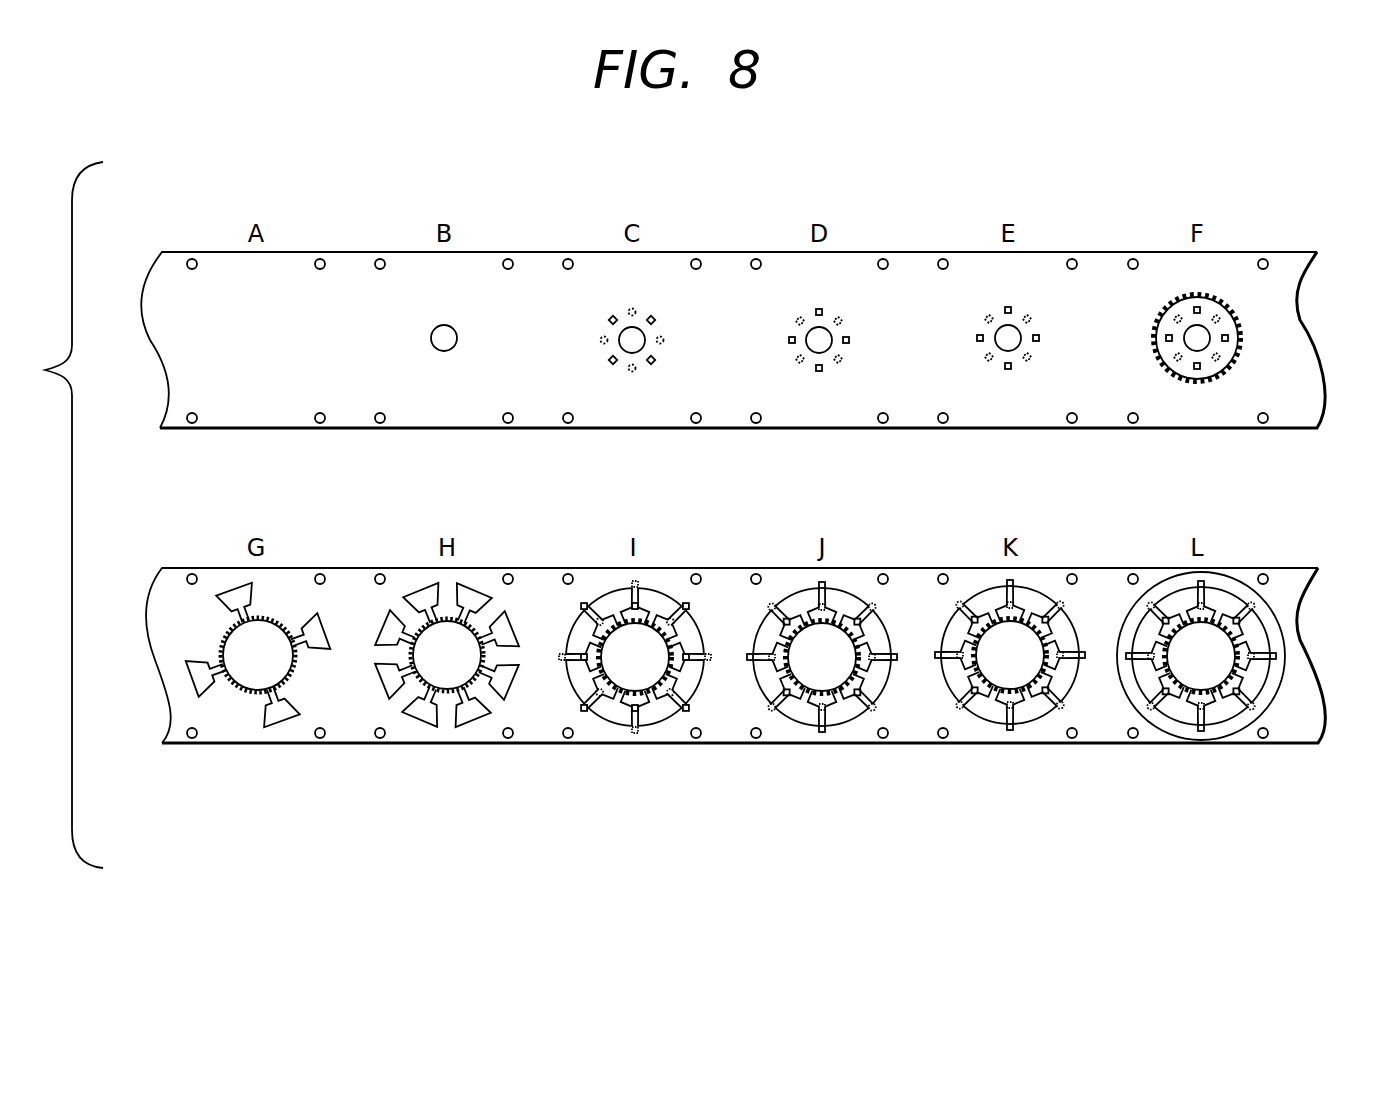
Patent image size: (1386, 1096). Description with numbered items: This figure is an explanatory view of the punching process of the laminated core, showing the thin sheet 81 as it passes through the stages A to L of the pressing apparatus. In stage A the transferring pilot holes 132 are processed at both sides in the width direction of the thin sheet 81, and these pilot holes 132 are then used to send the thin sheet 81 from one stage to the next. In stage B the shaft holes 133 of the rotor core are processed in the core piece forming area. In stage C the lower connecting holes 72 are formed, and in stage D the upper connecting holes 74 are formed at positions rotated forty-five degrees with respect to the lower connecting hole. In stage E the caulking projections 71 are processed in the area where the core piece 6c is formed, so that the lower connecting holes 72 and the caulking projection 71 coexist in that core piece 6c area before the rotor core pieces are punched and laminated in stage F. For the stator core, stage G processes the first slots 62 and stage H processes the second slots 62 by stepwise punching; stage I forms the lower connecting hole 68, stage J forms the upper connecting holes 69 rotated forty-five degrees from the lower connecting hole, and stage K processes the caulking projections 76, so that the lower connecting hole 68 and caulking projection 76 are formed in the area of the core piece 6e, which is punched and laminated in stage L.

The pilot holes 132 is at (730, 500).
The thin sheet 81 is at (153, 299).
The shaft holes 133 is at (447, 340).
The lower connecting hole 68 is at (636, 501).
The lower connecting holes 72 is at (651, 317).
The upper connecting holes 69 is at (822, 491).
The upper connecting holes 74 is at (818, 309).
The caulking projections 71 is at (1013, 498).
The caulking projections 76 is at (1008, 307).
The slots 62 is at (256, 735).
The core piece 6c is at (1212, 288).
The core piece 6e is at (1280, 692).